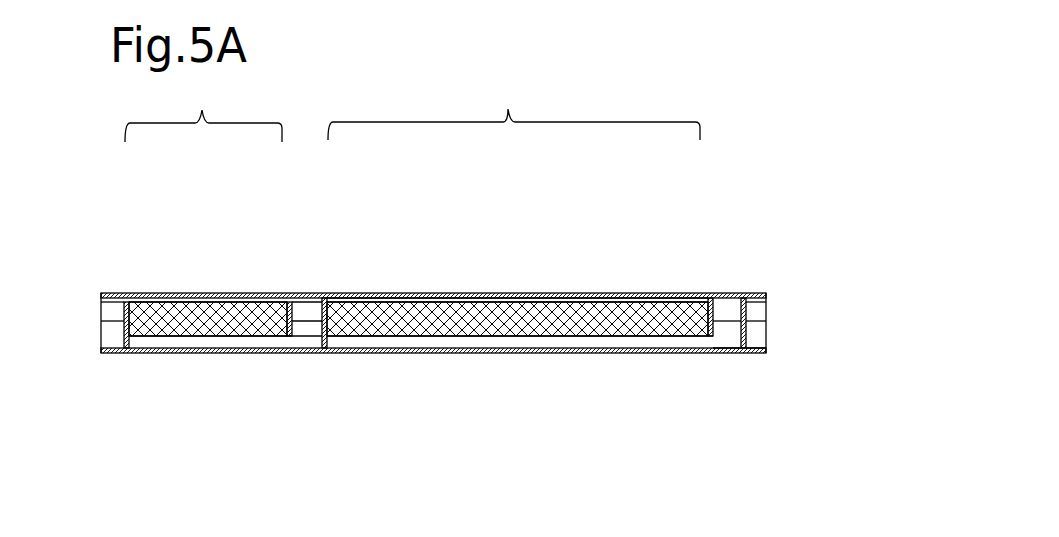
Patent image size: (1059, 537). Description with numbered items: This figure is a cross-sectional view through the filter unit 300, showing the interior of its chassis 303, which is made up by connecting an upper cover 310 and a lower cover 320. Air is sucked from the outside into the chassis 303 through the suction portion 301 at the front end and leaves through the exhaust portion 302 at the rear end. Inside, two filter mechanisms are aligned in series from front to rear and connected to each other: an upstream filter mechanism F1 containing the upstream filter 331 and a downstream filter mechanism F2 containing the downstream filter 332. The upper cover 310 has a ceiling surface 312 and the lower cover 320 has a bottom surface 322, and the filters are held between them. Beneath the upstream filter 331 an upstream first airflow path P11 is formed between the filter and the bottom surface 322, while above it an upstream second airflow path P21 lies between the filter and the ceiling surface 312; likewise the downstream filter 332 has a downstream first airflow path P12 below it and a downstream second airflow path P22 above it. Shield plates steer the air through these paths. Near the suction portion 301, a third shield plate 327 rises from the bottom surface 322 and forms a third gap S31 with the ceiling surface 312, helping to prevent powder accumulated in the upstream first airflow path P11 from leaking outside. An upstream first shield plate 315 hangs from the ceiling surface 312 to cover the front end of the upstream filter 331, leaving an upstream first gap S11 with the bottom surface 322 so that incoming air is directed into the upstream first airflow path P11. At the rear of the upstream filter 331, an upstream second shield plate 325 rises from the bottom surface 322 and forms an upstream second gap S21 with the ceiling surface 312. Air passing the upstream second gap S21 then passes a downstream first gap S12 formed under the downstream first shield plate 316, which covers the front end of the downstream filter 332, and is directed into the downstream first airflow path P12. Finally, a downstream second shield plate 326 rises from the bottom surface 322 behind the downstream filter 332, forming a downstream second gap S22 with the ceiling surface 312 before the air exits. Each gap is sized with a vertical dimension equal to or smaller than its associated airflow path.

The filter unit 300 is at (392, 435).
The suction portion 301 is at (760, 316).
The exhaust portion 302 is at (115, 314).
The chassis 303 is at (476, 243).
The upper cover 310 is at (507, 298).
The lower cover 320 is at (482, 352).
The ceiling surface 312 is at (768, 312).
The bottom surface 322 is at (758, 337).
The upstream first shield plate 315 is at (717, 306).
The downstream first shield plate 316 is at (293, 303).
The upstream second shield plate 325 is at (318, 328).
The downstream second shield plate 326 is at (125, 322).
The third shield plate 327 is at (730, 338).
The upstream filter 331 is at (409, 315).
The downstream filter 332 is at (172, 312).
The upstream filter mechanism F1 is at (514, 110).
The downstream filter mechanism F2 is at (203, 111).
The upstream first airflow path P11 is at (567, 342).
The downstream first airflow path P12 is at (205, 342).
The upstream second airflow path P21 is at (596, 310).
The downstream second airflow path P22 is at (224, 298).
The upstream first gap S11 is at (710, 343).
The downstream first gap S12 is at (292, 343).
The upstream second gap S21 is at (318, 324).
The downstream second gap S22 is at (121, 305).
The third gap S31 is at (746, 304).